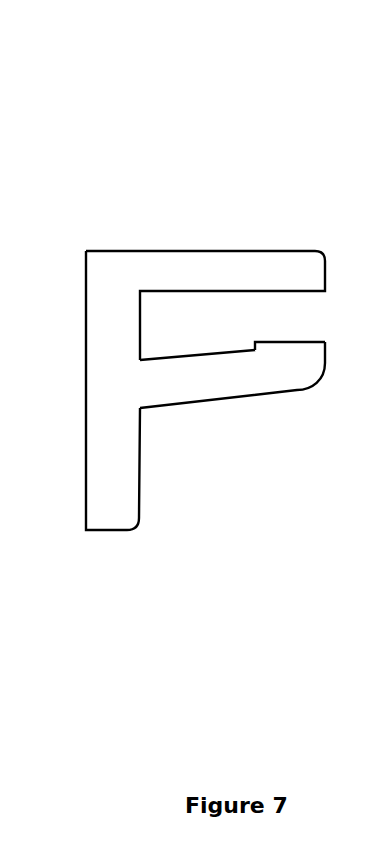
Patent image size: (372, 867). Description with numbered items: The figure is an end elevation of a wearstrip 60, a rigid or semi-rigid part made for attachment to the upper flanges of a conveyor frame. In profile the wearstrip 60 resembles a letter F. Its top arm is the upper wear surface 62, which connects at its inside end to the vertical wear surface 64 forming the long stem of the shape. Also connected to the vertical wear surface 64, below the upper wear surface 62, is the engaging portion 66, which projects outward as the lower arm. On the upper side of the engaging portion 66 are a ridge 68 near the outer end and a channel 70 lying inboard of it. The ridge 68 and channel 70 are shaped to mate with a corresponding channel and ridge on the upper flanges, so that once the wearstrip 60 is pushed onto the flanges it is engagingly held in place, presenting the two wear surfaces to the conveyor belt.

The wearstrip 60 is at (69, 83).
The upper wear surface 62 is at (192, 263).
The vertical wear surface 64 is at (100, 389).
The engaging portion 66 is at (226, 389).
The ridge 68 is at (295, 342).
The channel 70 is at (166, 359).